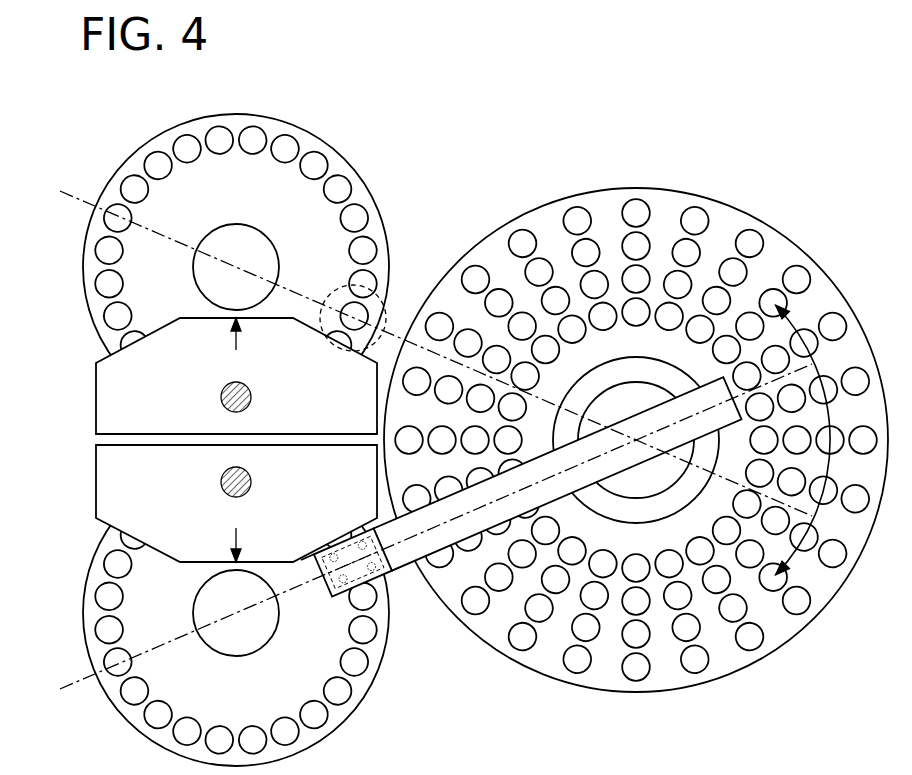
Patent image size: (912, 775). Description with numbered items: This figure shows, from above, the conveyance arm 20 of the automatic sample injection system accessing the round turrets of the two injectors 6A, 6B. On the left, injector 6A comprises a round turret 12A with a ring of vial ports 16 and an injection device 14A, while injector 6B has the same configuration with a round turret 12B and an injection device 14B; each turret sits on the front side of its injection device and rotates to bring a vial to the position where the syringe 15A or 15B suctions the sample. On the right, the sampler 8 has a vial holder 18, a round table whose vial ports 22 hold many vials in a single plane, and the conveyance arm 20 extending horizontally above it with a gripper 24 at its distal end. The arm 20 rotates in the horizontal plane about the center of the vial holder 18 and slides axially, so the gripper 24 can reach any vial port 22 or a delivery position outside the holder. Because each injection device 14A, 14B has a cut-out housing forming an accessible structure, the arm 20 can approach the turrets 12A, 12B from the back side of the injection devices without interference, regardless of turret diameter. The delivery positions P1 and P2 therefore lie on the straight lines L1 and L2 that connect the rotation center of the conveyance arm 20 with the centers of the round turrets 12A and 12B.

The injector 6A is at (203, 605).
The injector 6B is at (203, 250).
The sampler 8 is at (636, 402).
The round turret 12A is at (107, 692).
The round turret 12B is at (236, 243).
The injection device 14A is at (200, 503).
The injection device 14B is at (200, 376).
The syringe 15A is at (222, 481).
The syringe 15B is at (222, 399).
The vial port 16 is at (317, 155).
The vial holder 18 is at (636, 422).
The conveyance arm 20 is at (560, 487).
The vial port 22 is at (700, 212).
The gripper 24 is at (358, 572).
The delivery position P1 is at (385, 573).
The delivery position P2 is at (378, 248).
The straight line L1 is at (477, 509).
The straight line L2 is at (453, 361).